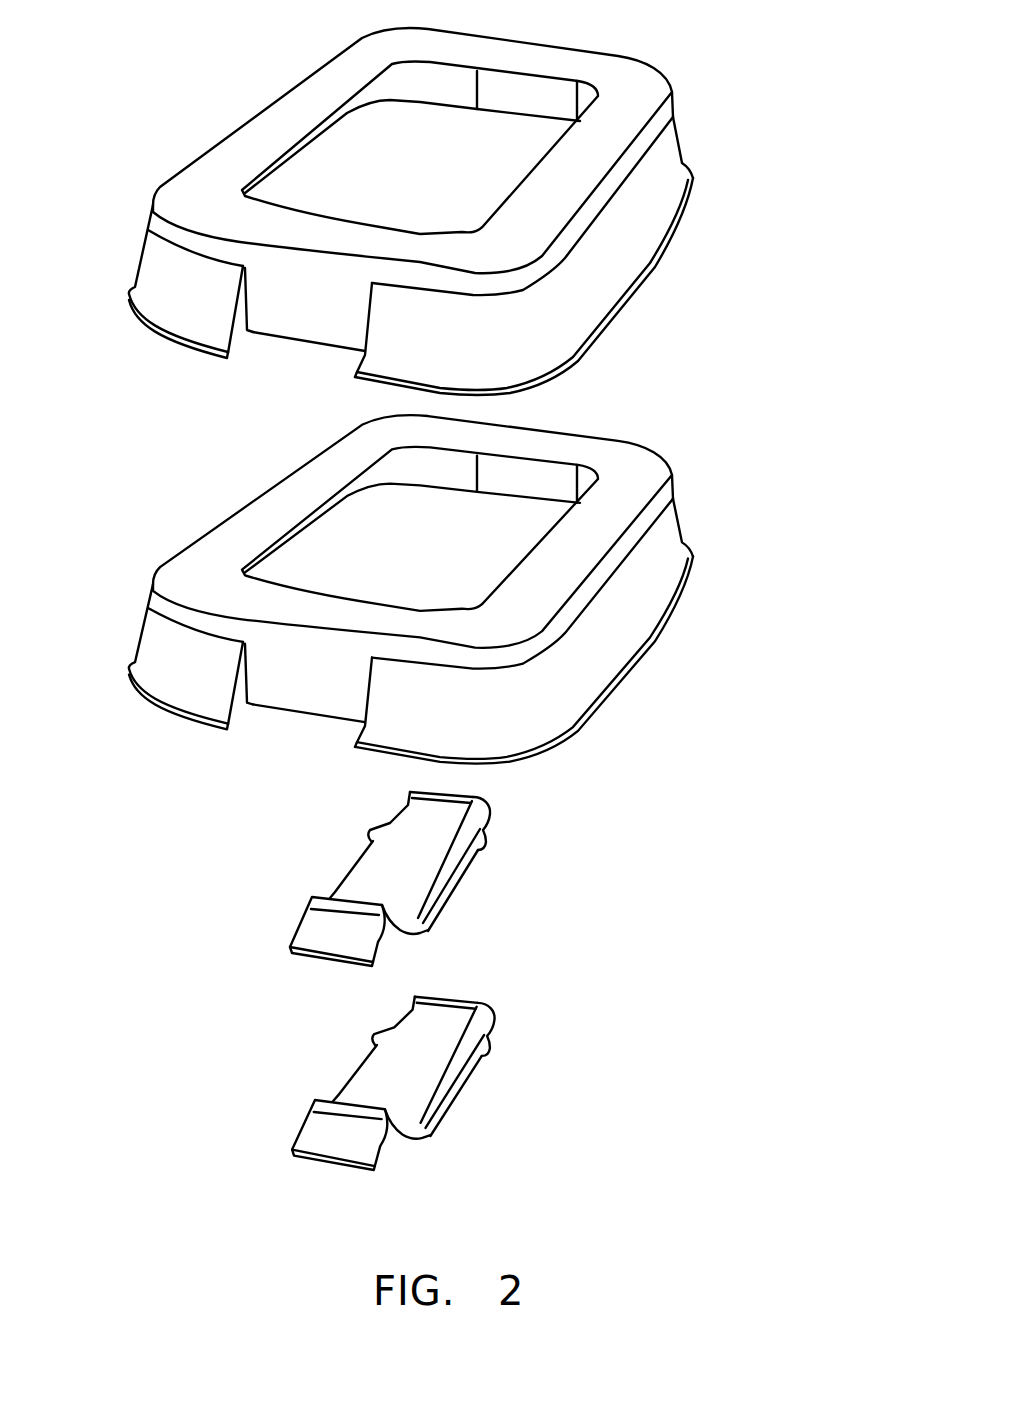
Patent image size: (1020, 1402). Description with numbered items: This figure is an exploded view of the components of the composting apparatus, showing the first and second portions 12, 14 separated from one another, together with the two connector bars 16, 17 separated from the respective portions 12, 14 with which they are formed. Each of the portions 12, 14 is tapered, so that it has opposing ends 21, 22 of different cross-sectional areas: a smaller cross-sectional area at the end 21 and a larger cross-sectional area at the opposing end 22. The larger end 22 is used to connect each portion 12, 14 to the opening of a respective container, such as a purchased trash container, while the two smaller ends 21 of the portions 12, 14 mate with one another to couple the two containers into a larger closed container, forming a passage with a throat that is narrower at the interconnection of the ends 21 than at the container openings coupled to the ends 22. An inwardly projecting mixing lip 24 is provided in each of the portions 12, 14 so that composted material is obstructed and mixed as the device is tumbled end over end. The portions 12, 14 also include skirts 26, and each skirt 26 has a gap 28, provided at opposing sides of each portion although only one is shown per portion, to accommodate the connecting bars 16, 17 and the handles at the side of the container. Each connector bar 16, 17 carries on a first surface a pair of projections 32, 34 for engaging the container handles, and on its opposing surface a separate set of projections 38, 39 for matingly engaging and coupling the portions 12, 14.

The first portion 12 is at (260, 131).
The second portion 14 is at (252, 523).
The connector bar 16 is at (366, 872).
The connector bar 17 is at (372, 1073).
The end 21 is at (625, 60).
The end 22 is at (657, 250).
The mixing lip 24 is at (357, 83).
The skirt 26 is at (183, 308).
The gap 28 is at (292, 340).
The projection 32 is at (313, 927).
The projection 34 is at (410, 792).
The projection 38 is at (419, 933).
The projection 39 is at (480, 848).